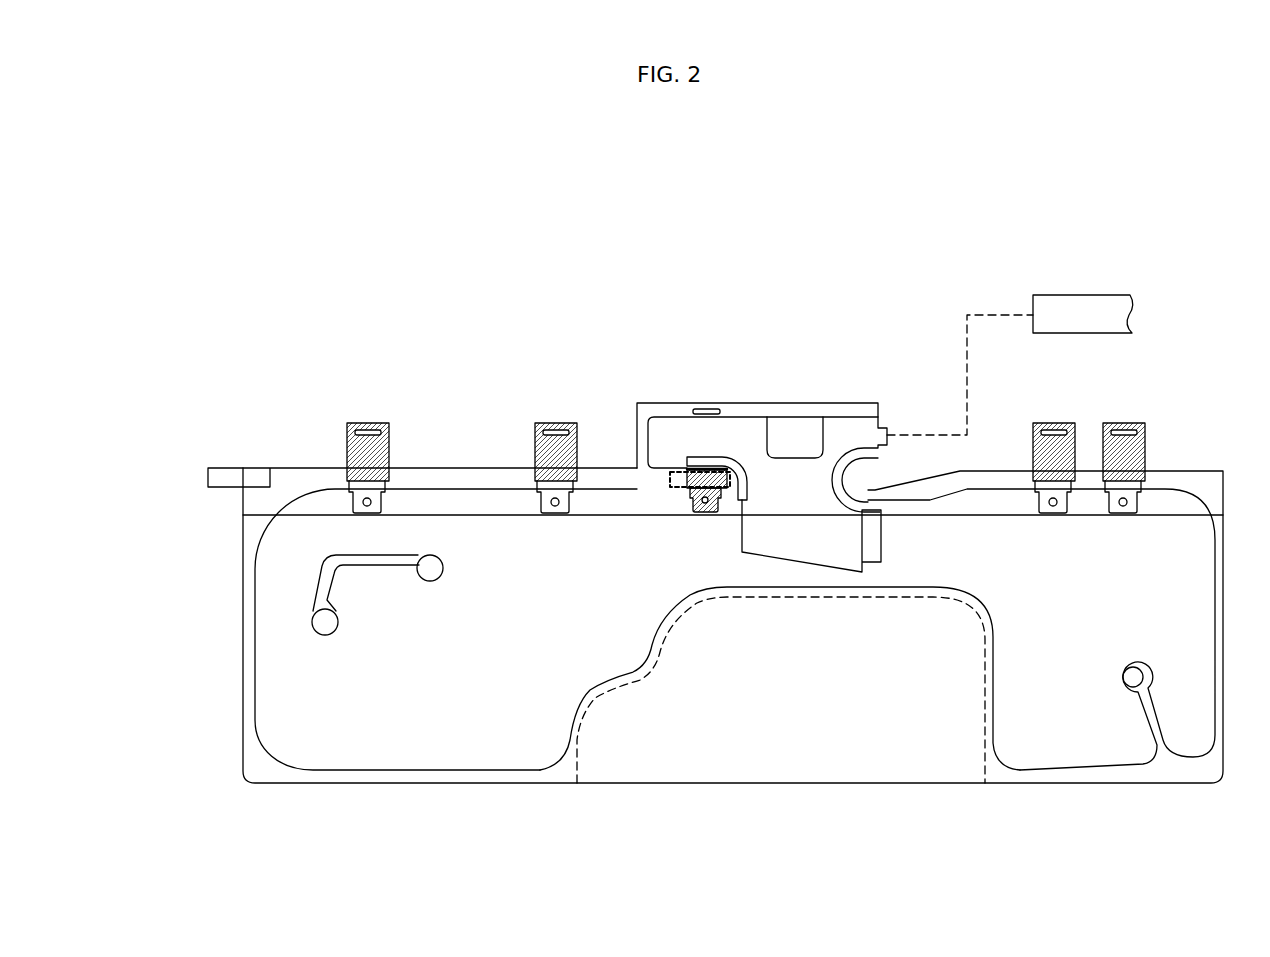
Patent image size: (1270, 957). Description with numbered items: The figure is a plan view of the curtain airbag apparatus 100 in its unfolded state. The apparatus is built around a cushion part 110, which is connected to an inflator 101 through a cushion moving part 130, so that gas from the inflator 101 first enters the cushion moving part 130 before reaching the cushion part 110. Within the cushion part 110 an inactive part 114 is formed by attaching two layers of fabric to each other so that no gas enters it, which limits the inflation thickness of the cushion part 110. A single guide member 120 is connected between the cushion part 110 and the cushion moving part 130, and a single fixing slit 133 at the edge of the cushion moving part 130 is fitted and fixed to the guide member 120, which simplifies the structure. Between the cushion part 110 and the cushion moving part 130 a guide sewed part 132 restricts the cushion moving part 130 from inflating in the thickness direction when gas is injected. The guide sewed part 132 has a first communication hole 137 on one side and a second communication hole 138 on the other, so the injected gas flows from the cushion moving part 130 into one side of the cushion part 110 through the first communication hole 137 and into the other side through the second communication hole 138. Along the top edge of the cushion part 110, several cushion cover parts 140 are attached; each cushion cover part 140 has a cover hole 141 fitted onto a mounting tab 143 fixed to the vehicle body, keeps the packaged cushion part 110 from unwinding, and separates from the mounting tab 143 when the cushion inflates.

The curtain airbag apparatus 100 is at (1233, 259).
The inflator 101 is at (1108, 295).
The cushion part 110 is at (458, 691).
The inactive part 114 is at (993, 688).
The guide member 120 is at (702, 468).
The cushion moving part 130 is at (800, 401).
The guide sewed part 132 is at (668, 477).
The fixing slit 133 is at (713, 410).
The first communication hole 137 is at (795, 490).
The second communication hole 138 is at (675, 458).
The cushion cover part 140 is at (378, 424).
The cover hole 141 is at (357, 423).
The mounting tab 143 is at (355, 500).